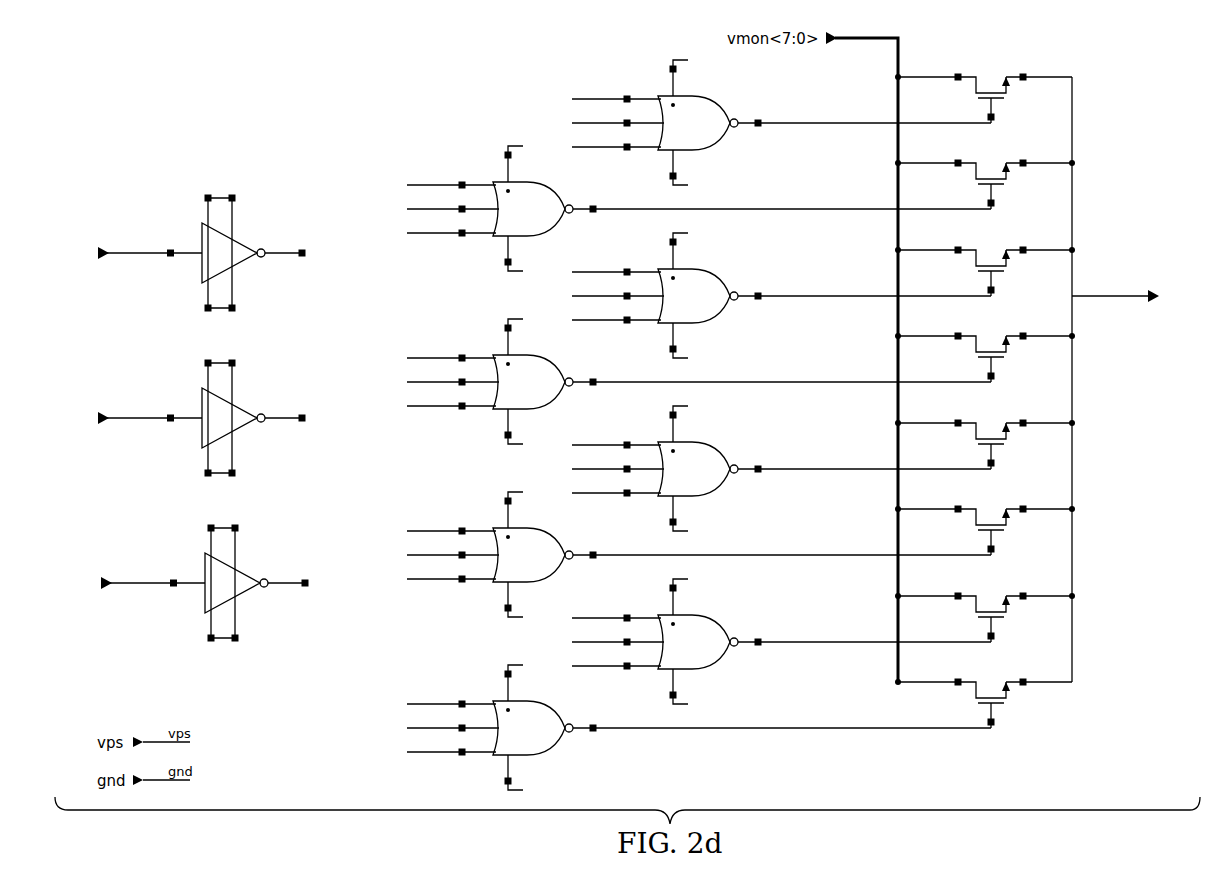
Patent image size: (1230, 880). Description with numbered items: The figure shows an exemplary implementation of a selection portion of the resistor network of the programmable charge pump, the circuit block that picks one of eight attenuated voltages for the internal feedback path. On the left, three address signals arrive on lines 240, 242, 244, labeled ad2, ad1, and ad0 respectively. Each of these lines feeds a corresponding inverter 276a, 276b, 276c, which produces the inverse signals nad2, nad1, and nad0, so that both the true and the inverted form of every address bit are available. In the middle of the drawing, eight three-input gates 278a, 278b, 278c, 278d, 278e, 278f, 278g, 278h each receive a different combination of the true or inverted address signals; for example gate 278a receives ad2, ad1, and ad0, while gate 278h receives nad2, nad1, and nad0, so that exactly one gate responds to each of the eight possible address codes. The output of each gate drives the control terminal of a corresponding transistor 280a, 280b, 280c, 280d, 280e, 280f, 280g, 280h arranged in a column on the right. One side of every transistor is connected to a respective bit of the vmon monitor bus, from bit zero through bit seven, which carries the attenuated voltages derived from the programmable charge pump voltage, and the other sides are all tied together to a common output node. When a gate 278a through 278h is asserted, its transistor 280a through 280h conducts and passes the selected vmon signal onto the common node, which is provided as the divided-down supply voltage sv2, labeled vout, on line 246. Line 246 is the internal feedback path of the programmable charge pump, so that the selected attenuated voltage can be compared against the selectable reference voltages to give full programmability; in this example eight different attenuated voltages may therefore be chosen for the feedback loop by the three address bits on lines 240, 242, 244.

The line 240 is at (132, 234).
The line 242 is at (132, 399).
The line 244 is at (135, 564).
The line 246 is at (1118, 299).
The inverter 276a is at (250, 256).
The inverter 276b is at (250, 421).
The inverter 276c is at (253, 586).
The gate 278a is at (781, 123).
The gate 278b is at (699, 209).
The gate 278c is at (781, 296).
The gate 278d is at (699, 382).
The gate 278e is at (781, 469).
The gate 278f is at (699, 555).
The gate 278g is at (781, 642).
The gate 278h is at (699, 728).
The transistor 280a is at (1019, 82).
The transistor 280b is at (1019, 168).
The transistor 280c is at (1019, 255).
The transistor 280d is at (1019, 341).
The transistor 280e is at (1019, 428).
The transistor 280f is at (1018, 514).
The transistor 280g is at (1019, 601).
The transistor 280h is at (1019, 687).